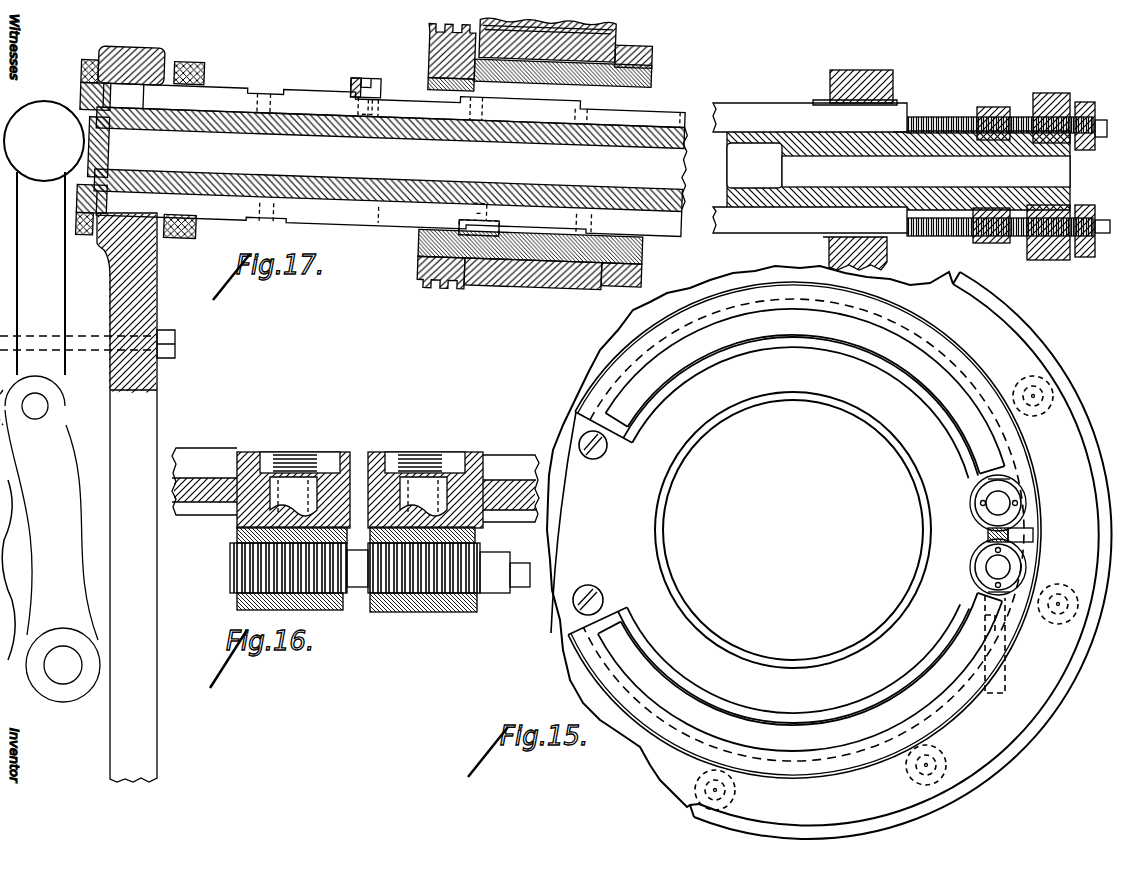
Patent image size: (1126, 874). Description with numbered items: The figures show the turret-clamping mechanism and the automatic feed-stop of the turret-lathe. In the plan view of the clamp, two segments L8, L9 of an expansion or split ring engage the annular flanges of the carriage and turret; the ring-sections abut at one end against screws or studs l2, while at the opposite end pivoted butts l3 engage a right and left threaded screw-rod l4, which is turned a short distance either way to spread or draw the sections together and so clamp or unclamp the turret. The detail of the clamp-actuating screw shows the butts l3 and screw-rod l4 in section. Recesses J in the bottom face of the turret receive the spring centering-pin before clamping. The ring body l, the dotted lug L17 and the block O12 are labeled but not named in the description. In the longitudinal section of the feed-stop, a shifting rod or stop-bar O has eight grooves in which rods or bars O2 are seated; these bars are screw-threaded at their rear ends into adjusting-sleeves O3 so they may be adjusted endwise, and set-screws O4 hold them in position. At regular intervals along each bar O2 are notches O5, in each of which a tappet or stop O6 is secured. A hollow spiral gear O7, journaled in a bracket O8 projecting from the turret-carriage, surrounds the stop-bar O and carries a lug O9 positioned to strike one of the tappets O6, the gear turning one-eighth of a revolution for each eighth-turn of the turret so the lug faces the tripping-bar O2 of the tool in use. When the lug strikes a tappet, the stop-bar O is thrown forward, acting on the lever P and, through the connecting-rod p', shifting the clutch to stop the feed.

In FIG. 17, the shifting rod O is at (391, 159).
In FIG. 17, the rods or bars O2 is at (390, 162).
In FIG. 17, the screw-threaded adjusting-sleeves O3 is at (987, 106).
In FIG. 17, the set-screws O4 is at (1098, 138).
In FIG. 17, the notches O5 is at (245, 90).
In FIG. 17, the tappet or stop O6 is at (365, 96).
In FIG. 17, the spiral gear O7 is at (446, 156).
In FIG. 17, the bracket O8 is at (558, 155).
In FIG. 17, the lug O9 is at (451, 85).
In FIG. 17, the key block O12 is at (179, 226).
In FIG. 17, the lever P is at (44, 238).
In FIG. 17, the connecting-rod p' is at (87, 500).
In FIG. 16, the segment of expansion ring L8 is at (496, 451).
In FIG. 15, the segment of expansion ring L8 is at (785, 740).
In FIG. 16, the segment of expansion ring L9 is at (206, 443).
In FIG. 15, the segment of expansion ring L9 is at (840, 338).
In FIG. 15, the hidden lug L17 is at (993, 688).
In FIG. 15, the ring plate l is at (560, 477).
In FIG. 15, the screws or studs l2 is at (594, 459).
In FIG. 16, the pivoted butts l3 is at (337, 605).
In FIG. 15, the pivoted butts l3 is at (995, 502).
In FIG. 16, the right and left threaded screw-rod l4 is at (495, 592).
In FIG. 15, the right and left threaded screw-rod l4 is at (987, 533).
In FIG. 15, the recesses J is at (1040, 417).